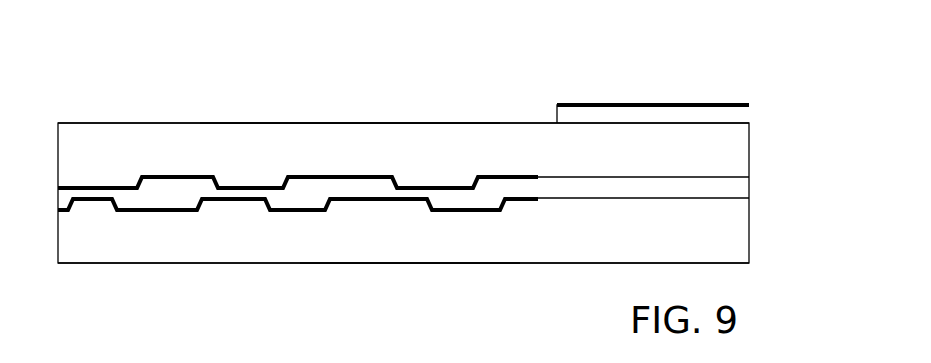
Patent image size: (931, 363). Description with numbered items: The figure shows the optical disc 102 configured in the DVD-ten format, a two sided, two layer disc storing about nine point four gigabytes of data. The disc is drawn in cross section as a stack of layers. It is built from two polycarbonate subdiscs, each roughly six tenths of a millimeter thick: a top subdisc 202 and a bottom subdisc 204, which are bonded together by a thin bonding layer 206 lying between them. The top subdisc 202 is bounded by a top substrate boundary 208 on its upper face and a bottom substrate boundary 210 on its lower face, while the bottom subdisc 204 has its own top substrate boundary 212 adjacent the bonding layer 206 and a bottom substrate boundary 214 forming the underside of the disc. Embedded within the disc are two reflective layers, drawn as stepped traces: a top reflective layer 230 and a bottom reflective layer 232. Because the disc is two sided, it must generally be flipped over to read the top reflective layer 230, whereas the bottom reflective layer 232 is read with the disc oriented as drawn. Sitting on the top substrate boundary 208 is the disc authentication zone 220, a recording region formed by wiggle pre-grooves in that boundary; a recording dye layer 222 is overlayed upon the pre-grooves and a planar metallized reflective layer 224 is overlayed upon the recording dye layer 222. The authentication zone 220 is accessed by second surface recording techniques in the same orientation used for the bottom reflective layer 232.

The optical disc 102 is at (178, 39).
The top subdisc 202 is at (737, 155).
The bottom subdisc 204 is at (722, 240).
The bonding layer 206 is at (737, 186).
The top substrate boundary 208 is at (355, 123).
The bottom substrate boundary 210 is at (553, 177).
The top substrate boundary 212 is at (555, 200).
The bottom substrate boundary 214 is at (418, 263).
The disc authentication zone 220 is at (696, 70).
The recording dye layer 222 is at (612, 117).
The metallized reflective layer 224 is at (643, 103).
The top reflective layer 230 is at (176, 176).
The bottom reflective layer 232 is at (176, 212).